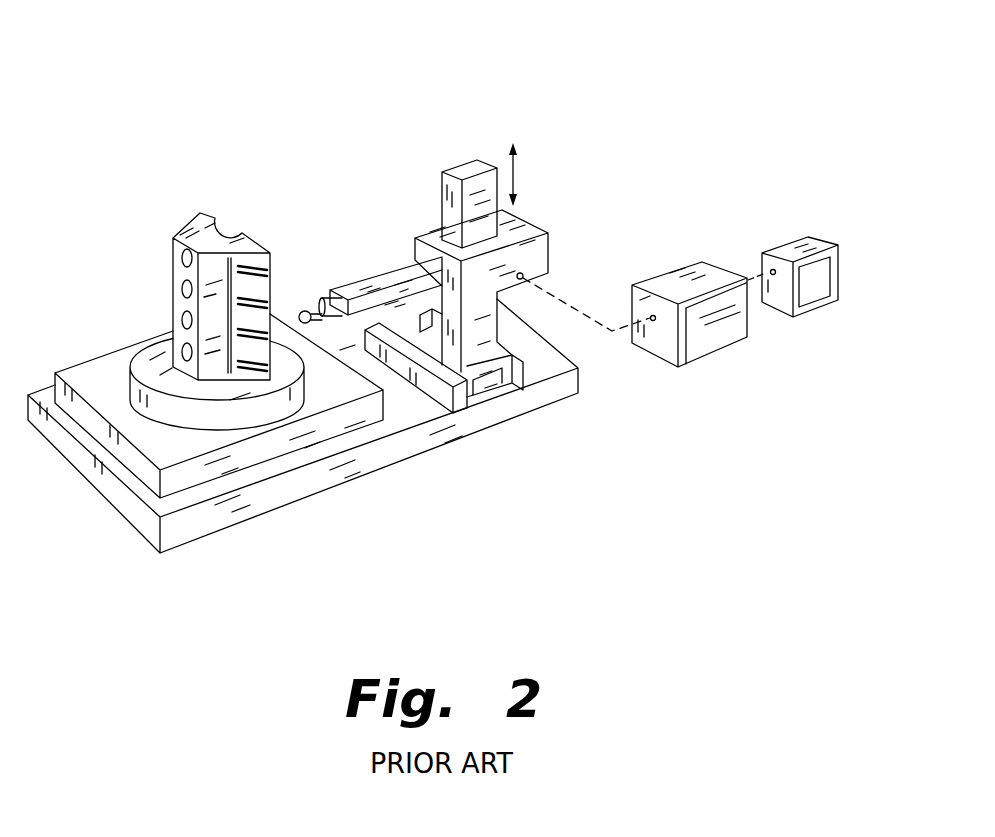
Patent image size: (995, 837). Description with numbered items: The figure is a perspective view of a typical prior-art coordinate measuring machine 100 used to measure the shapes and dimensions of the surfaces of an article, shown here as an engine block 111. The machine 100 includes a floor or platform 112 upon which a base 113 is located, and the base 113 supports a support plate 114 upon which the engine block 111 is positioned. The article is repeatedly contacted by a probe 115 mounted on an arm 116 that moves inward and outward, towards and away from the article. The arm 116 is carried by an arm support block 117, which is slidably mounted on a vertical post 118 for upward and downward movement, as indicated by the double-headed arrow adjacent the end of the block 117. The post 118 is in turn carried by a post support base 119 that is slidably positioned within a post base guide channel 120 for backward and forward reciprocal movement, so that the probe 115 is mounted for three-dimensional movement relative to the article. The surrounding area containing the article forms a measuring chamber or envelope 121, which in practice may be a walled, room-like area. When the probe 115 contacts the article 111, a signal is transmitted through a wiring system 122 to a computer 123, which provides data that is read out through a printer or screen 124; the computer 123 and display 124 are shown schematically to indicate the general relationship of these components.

The coordinate measuring machine 100 is at (318, 341).
The engine block 111 is at (171, 270).
The floor or platform 112 is at (418, 447).
The base 113 is at (178, 485).
The support plate 114 is at (152, 352).
The probe 115 is at (305, 311).
The arm 116 is at (390, 268).
The arm support block 117 is at (548, 243).
The vertical post 118 is at (484, 178).
The post support base 119 is at (510, 373).
The post base guide channel 120 is at (490, 398).
The chamber or envelope 121 is at (455, 302).
The wiring system 122 is at (562, 300).
The computer 123 is at (708, 343).
The printer or screen 124 is at (827, 307).